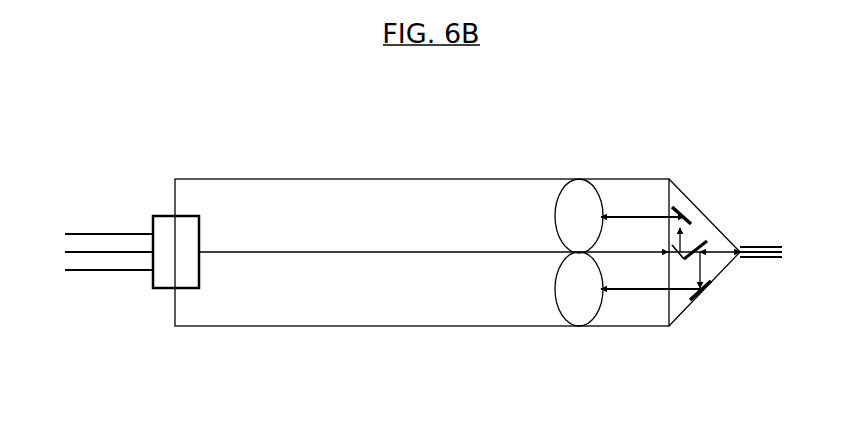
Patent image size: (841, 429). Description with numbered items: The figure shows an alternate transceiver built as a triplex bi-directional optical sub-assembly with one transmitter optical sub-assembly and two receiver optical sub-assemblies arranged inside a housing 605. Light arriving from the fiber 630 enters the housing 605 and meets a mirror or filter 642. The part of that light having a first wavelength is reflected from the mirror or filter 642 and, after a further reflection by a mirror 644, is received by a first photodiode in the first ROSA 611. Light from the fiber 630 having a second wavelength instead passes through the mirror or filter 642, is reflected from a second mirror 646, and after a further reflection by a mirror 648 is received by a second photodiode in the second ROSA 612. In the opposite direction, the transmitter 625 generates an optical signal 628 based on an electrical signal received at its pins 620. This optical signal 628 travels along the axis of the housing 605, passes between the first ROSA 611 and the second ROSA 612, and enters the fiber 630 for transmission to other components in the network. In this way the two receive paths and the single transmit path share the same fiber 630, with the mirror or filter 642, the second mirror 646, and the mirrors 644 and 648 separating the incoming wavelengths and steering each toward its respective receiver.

The housing 605 is at (175, 199).
The pins 620 is at (113, 272).
The transmitter 625 is at (168, 290).
The optical signal 628 is at (368, 253).
The second ROSA 612 is at (575, 178).
The first ROSA 611 is at (579, 327).
The fiber 630 is at (730, 243).
The mirror 648 is at (679, 205).
The mirror or filter 642 is at (697, 243).
The second mirror 646 is at (677, 261).
The mirror 644 is at (706, 293).